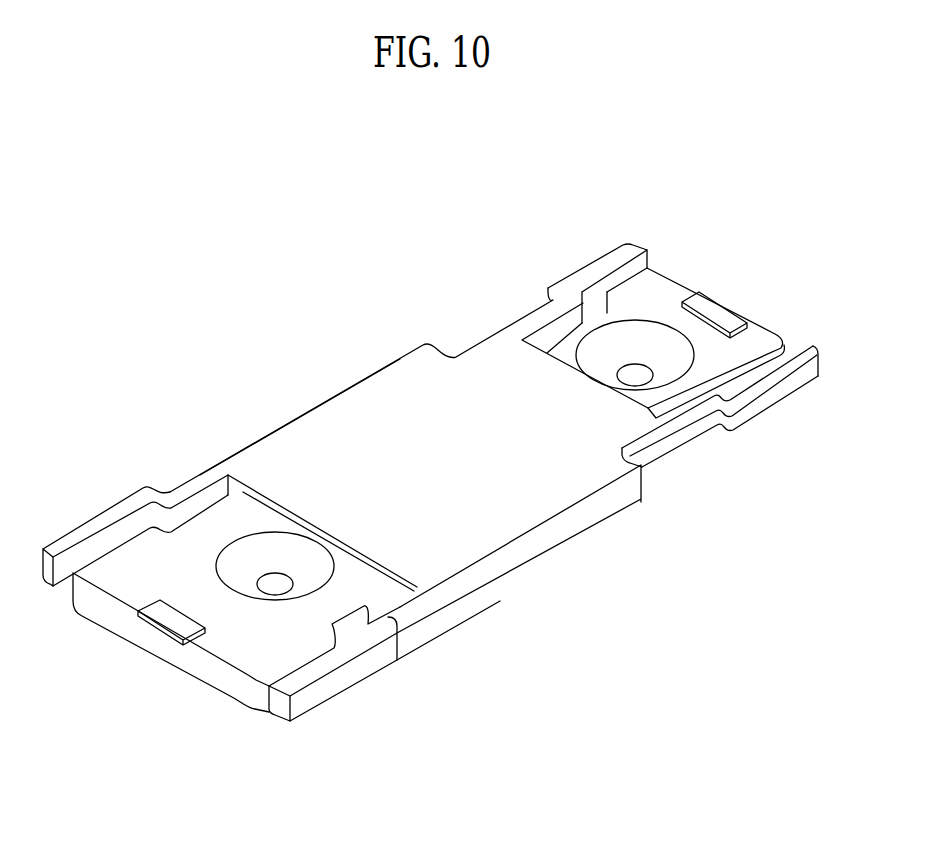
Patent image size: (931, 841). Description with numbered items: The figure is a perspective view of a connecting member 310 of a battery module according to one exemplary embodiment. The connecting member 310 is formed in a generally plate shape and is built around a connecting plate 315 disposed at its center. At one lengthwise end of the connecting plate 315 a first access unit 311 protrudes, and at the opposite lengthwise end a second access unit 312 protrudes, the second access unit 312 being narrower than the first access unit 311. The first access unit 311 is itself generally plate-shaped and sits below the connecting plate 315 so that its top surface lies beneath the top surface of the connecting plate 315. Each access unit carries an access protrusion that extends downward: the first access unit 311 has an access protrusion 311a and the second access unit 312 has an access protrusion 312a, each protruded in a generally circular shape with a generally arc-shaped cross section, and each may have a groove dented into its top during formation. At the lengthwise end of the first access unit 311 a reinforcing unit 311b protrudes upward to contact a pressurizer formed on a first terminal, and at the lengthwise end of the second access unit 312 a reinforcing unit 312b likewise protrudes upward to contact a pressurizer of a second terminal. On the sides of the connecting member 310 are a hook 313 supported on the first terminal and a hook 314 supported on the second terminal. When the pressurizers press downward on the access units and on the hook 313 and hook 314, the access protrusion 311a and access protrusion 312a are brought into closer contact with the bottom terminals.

The connecting member 310 is at (363, 343).
The first access unit 311 is at (242, 667).
The access protrusion 311a is at (318, 570).
The reinforcing unit 311b is at (178, 632).
The second access unit 312 is at (662, 275).
The access protrusion 312a is at (667, 373).
The reinforcing unit 312b is at (722, 308).
The hook 313 is at (115, 508).
The hook 314 is at (590, 272).
The connecting plate 315 is at (292, 428).